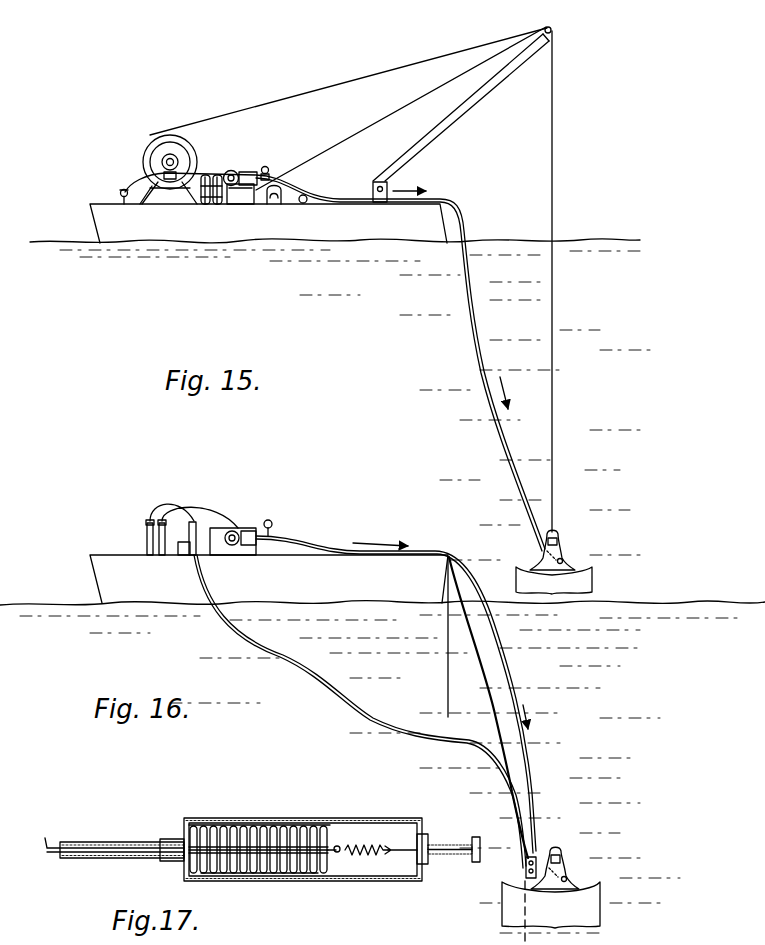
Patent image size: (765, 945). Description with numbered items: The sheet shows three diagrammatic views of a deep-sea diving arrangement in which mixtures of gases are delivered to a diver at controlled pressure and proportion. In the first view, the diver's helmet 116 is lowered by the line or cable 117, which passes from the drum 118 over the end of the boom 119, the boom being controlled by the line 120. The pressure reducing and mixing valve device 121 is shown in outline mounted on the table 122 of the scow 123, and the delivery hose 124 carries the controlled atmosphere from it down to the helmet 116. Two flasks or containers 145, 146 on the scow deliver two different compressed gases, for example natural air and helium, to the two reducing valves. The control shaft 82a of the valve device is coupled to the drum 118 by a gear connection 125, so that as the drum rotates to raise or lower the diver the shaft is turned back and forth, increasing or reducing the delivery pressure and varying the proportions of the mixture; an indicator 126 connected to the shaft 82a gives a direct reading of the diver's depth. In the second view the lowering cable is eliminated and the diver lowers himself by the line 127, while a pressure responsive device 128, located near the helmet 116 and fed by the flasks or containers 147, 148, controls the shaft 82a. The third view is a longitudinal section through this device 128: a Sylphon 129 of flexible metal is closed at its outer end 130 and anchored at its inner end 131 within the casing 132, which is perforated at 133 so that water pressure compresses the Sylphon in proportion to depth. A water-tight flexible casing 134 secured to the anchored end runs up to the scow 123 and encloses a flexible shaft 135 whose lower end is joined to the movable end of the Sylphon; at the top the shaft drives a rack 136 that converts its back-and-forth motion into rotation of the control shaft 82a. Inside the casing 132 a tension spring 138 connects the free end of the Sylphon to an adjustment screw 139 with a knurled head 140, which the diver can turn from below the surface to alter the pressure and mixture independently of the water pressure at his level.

In FIG. 15, the control shaft 82a is at (207, 174).
In FIG. 16, the control shaft 82a is at (214, 523).
In FIG. 15, the diver's helmet 116 is at (566, 556).
In FIG. 16, the diver's helmet 116 is at (565, 867).
In FIG. 15, the line or cable 117 is at (318, 89).
In FIG. 15, the drum 118 is at (146, 148).
In FIG. 15, the boom 119 is at (434, 139).
In FIG. 15, the line 120 is at (385, 124).
In FIG. 15, the pressure reducing and mixing valve device 121 is at (242, 166).
In FIG. 16, the pressure reducing and mixing valve device 121 is at (505, 757).
In FIG. 15, the table 122 is at (235, 206).
In FIG. 15, the scow 123 is at (268, 223).
In FIG. 16, the scow 123 is at (269, 579).
In FIG. 15, the delivery hose 124 is at (298, 178).
In FIG. 16, the delivery hose 124 is at (309, 534).
In FIG. 15, the gear connection 125 is at (154, 196).
In FIG. 15, the indicator 126 is at (119, 190).
In FIG. 16, the line 127 is at (489, 674).
In FIG. 16, the pressure responsive device 128 is at (522, 869).
In FIG. 17, the pressure responsive device 128 is at (319, 815).
In FIG. 17, the Sylphon 129 is at (257, 826).
In FIG. 17, the outer end 130 is at (294, 852).
In FIG. 17, the inner end 131 is at (185, 832).
In FIG. 17, the casing 132 is at (223, 817).
In FIG. 17, the perforations 133 is at (305, 880).
In FIG. 16, the water-tight flexible casing 134 is at (304, 678).
In FIG. 17, the water-tight flexible casing 134 is at (83, 841).
In FIG. 17, the flexible shaft 135 is at (45, 848).
In FIG. 16, the rack 136 is at (191, 521).
In FIG. 17, the tension spring 138 is at (361, 858).
In FIG. 17, the adjustment screw 139 is at (444, 844).
In FIG. 16, the knurled head 140 is at (528, 878).
In FIG. 17, the knurled head 140 is at (474, 836).
In FIG. 15, the flask or container 145 is at (207, 190).
In FIG. 15, the flask or container 146 is at (216, 206).
In FIG. 16, the flask or container 147 is at (145, 537).
In FIG. 16, the flask or container 148 is at (147, 523).